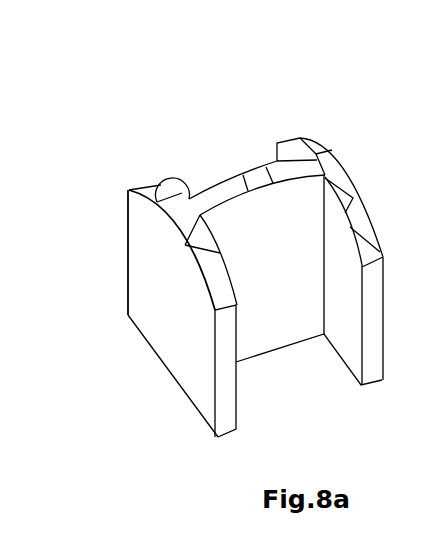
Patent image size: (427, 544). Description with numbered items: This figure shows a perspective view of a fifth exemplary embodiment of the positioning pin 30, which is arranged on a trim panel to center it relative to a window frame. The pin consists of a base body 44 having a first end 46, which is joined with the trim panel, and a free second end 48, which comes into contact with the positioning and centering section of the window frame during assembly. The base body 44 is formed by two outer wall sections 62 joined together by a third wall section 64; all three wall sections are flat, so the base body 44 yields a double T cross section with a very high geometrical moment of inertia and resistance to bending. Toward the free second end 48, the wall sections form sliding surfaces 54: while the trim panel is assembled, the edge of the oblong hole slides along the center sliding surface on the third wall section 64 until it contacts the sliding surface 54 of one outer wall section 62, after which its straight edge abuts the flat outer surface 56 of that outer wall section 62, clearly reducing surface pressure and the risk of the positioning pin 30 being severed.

The positioning pin 30 is at (123, 108).
The base body 44 is at (173, 313).
The outer surface 56 is at (211, 323).
The first end 46 is at (258, 432).
The free second end 48 is at (387, 103).
The sliding surface 54 is at (254, 114).
The outer wall section 62 is at (171, 188).
The third wall section 64 is at (254, 178).